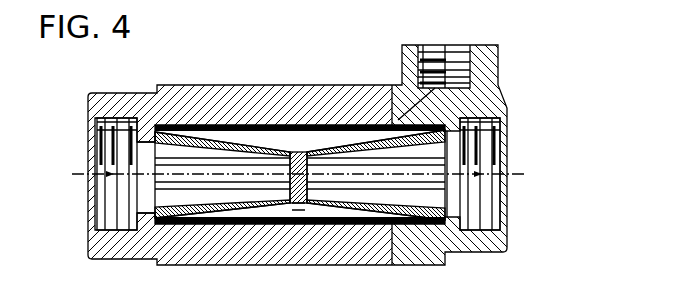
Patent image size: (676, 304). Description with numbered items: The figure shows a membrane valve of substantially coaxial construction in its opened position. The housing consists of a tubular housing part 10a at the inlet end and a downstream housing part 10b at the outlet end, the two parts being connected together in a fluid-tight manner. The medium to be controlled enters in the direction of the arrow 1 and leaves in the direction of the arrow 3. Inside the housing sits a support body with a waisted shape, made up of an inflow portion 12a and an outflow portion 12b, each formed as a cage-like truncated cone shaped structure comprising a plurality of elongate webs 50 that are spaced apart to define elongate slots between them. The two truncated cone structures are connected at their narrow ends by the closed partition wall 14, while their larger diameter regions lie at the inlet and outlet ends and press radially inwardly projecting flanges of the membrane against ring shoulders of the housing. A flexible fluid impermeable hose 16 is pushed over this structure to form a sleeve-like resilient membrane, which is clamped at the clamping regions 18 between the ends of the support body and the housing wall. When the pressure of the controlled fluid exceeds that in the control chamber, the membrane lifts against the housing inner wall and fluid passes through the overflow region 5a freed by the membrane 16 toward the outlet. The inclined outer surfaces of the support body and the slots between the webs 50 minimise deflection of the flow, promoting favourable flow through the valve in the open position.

The arrow 1 is at (110, 163).
The arrow 3 is at (329, 155).
The overflow region 5a is at (254, 138).
The tubular housing part 10a is at (168, 100).
The downstream housing part 10b is at (477, 102).
The inflow portion 12a is at (267, 214).
The outflow portion 12b is at (342, 214).
The partition wall 14 is at (296, 140).
The flexible fluid impermeable hose 16 is at (312, 220).
The clamping regions 18 is at (482, 145).
The elongate webs 50 is at (153, 167).